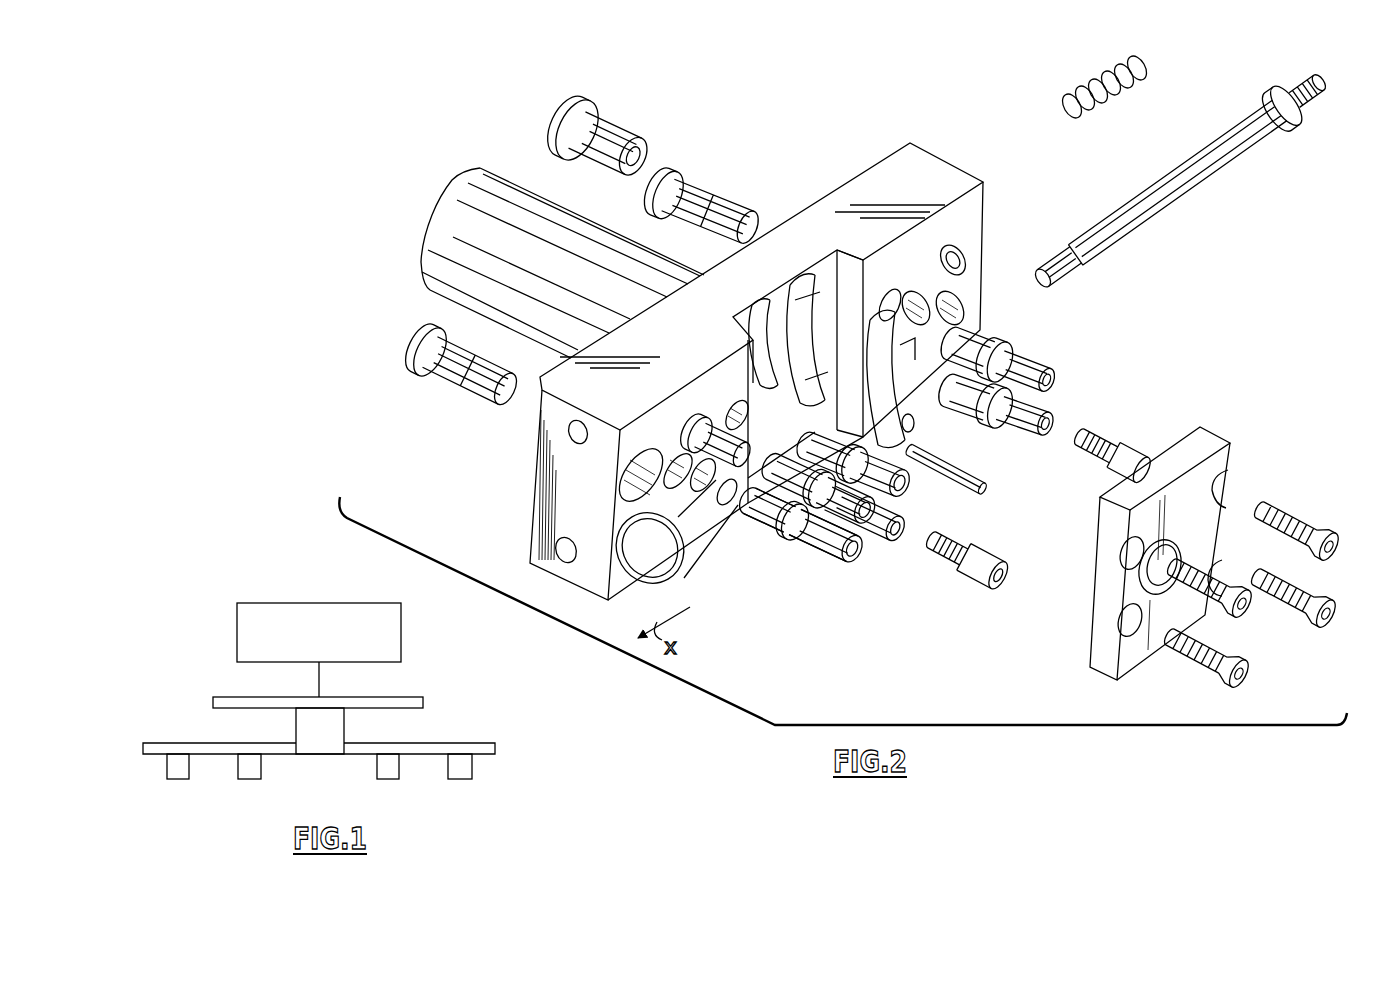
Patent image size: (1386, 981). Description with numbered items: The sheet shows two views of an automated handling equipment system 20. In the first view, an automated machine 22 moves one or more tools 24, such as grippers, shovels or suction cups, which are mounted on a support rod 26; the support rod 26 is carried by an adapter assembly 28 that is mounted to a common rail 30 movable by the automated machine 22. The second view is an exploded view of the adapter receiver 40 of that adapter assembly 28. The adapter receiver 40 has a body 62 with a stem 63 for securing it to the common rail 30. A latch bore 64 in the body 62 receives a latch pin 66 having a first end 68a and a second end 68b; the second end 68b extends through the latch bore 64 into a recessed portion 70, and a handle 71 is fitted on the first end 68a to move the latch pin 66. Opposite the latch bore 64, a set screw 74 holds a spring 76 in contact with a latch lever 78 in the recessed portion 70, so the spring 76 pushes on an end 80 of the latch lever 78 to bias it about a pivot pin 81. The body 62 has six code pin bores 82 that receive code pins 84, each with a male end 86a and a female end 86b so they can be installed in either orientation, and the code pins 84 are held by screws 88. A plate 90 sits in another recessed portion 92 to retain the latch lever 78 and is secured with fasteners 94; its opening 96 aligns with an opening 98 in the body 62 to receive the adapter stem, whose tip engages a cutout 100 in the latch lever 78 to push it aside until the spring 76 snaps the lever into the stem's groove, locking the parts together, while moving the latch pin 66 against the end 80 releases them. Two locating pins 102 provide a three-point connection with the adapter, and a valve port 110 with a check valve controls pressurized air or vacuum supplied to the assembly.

In FIG. 1, the automated handling equipment system 20 is at (181, 692).
In FIG. 1, the automated machine 22 is at (401, 636).
In FIG. 1, the tools 24 is at (175, 779).
In FIG. 1, the support rod 26 is at (448, 743).
In FIG. 1, the adapter assembly 28 is at (345, 720).
In FIG. 1, the common rail 30 is at (397, 697).
In FIG. 2, the adapter receiver 40 is at (558, 500).
In FIG. 2, the body 62 is at (920, 172).
In FIG. 2, the stem 63 is at (497, 188).
In FIG. 2, the latch bore 64 is at (574, 444).
In FIG. 2, the latch pin 66 is at (1160, 216).
In FIG. 2, the first end 68a is at (1053, 257).
In FIG. 2, the second end 68b is at (1269, 100).
In FIG. 2, the recessed portion 70 is at (787, 297).
In FIG. 2, the handle 71 is at (663, 585).
In FIG. 2, the set screw 74 is at (1321, 105).
In FIG. 2, the spring 76 is at (1113, 110).
In FIG. 2, the latch lever 78 is at (913, 426).
In FIG. 2, the end 80 is at (902, 370).
In FIG. 2, the pivot pin 81 is at (984, 491).
In FIG. 2, the code pin bores 82 is at (708, 410).
In FIG. 2, the code pins 84 is at (848, 592).
In FIG. 2, the male end 86a is at (873, 566).
In FIG. 2, the female end 86b is at (756, 534).
In FIG. 2, the screws 88 is at (1004, 563).
In FIG. 2, the plate 90 is at (1225, 432).
In FIG. 2, the recessed portion 92 is at (843, 268).
In FIG. 2, the fasteners 94 is at (1288, 637).
In FIG. 2, the opening 96 is at (1150, 583).
In FIG. 2, the opening 98 is at (767, 345).
In FIG. 2, the cutout 100 is at (908, 418).
In FIG. 2, the locating pins 102 is at (668, 170).
In FIG. 2, the valve port 110 is at (982, 308).